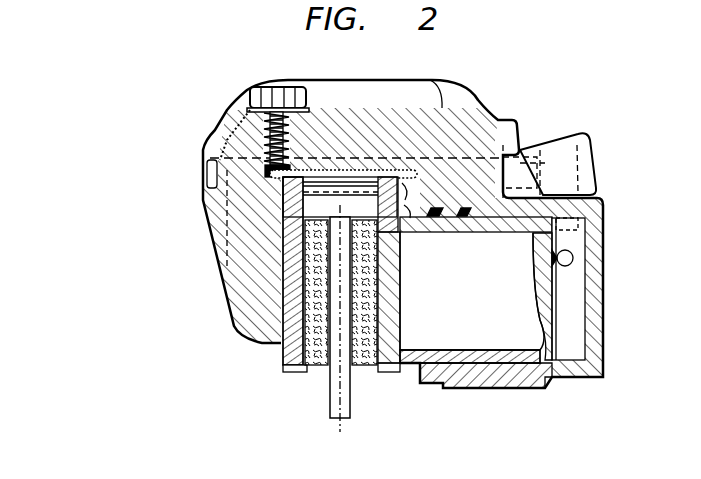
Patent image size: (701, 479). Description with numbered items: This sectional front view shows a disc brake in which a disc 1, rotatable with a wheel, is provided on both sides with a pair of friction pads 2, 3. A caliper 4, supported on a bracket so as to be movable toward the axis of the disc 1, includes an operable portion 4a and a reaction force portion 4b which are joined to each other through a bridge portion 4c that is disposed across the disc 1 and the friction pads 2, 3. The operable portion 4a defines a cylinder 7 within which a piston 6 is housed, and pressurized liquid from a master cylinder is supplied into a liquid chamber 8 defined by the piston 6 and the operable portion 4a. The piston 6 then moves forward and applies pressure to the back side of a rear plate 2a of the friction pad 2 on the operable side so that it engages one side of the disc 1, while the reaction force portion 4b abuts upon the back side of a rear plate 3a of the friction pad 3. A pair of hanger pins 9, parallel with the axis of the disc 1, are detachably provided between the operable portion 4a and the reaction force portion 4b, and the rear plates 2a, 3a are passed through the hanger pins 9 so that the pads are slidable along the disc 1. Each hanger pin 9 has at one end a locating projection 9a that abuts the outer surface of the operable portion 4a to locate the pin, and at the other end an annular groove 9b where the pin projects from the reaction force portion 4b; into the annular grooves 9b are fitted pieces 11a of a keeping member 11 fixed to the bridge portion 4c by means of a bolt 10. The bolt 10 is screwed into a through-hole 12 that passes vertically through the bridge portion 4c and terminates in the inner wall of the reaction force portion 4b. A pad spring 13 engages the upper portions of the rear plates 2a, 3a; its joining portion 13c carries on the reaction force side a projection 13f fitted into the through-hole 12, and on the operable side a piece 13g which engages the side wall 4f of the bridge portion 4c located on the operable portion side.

The disc 1 is at (337, 403).
The friction pad 2 is at (373, 373).
The rear plate 2a is at (403, 288).
The friction pad 3 is at (287, 375).
The rear plate 3a is at (283, 352).
The caliper 4 is at (471, 82).
The operable portion 4a is at (597, 222).
The reaction force portion 4b is at (236, 302).
The bridge portion 4c is at (390, 108).
The side wall 4f is at (450, 232).
The piston 6 is at (512, 367).
The cylinder 7 is at (480, 357).
The liquid chamber 8 is at (570, 322).
The hanger pin 9 is at (560, 142).
The locating projection 9a is at (508, 150).
The annular groove 9b is at (203, 200).
The bolt 10 is at (275, 100).
The keeping member 11 is at (223, 133).
The piece 11a is at (222, 155).
The through-hole 12 is at (262, 128).
The pad spring 13 is at (359, 185).
The joining portion 13c is at (326, 170).
The projection 13f is at (214, 240).
The piece 13g is at (410, 220).